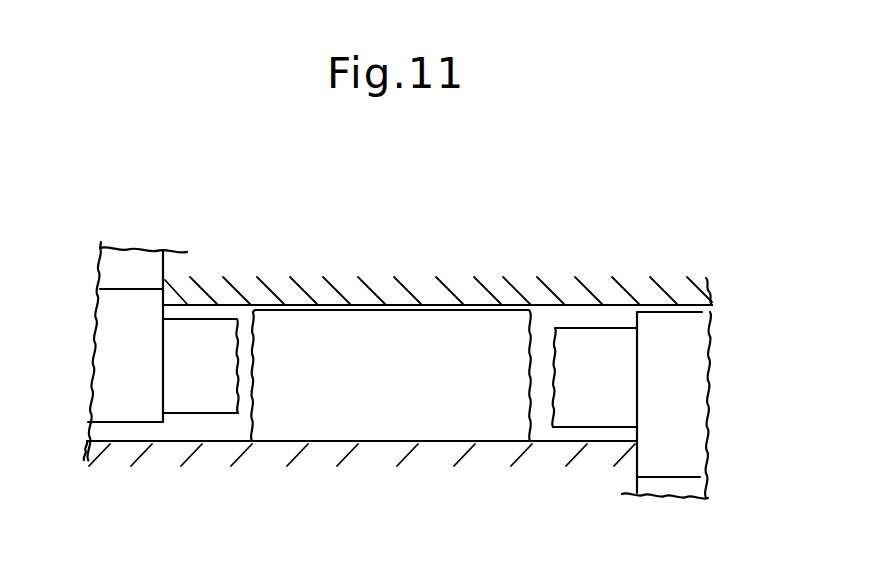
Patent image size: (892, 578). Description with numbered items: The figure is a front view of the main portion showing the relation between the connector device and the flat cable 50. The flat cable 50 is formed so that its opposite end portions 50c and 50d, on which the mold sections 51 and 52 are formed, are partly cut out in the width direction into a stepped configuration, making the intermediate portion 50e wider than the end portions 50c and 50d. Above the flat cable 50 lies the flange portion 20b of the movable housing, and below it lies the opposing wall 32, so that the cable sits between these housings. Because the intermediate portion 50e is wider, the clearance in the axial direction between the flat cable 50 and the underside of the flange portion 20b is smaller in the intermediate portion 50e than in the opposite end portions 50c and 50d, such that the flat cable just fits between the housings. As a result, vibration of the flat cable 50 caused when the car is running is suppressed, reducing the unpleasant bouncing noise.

The mold section 51 is at (139, 302).
The mold section 52 is at (663, 332).
The flat cable 50 is at (328, 297).
The flange portion 20b is at (422, 282).
The end portion 50c is at (210, 393).
The end portion 50d is at (595, 405).
The intermediate portion 50e is at (438, 407).
The base wall 32 is at (323, 452).